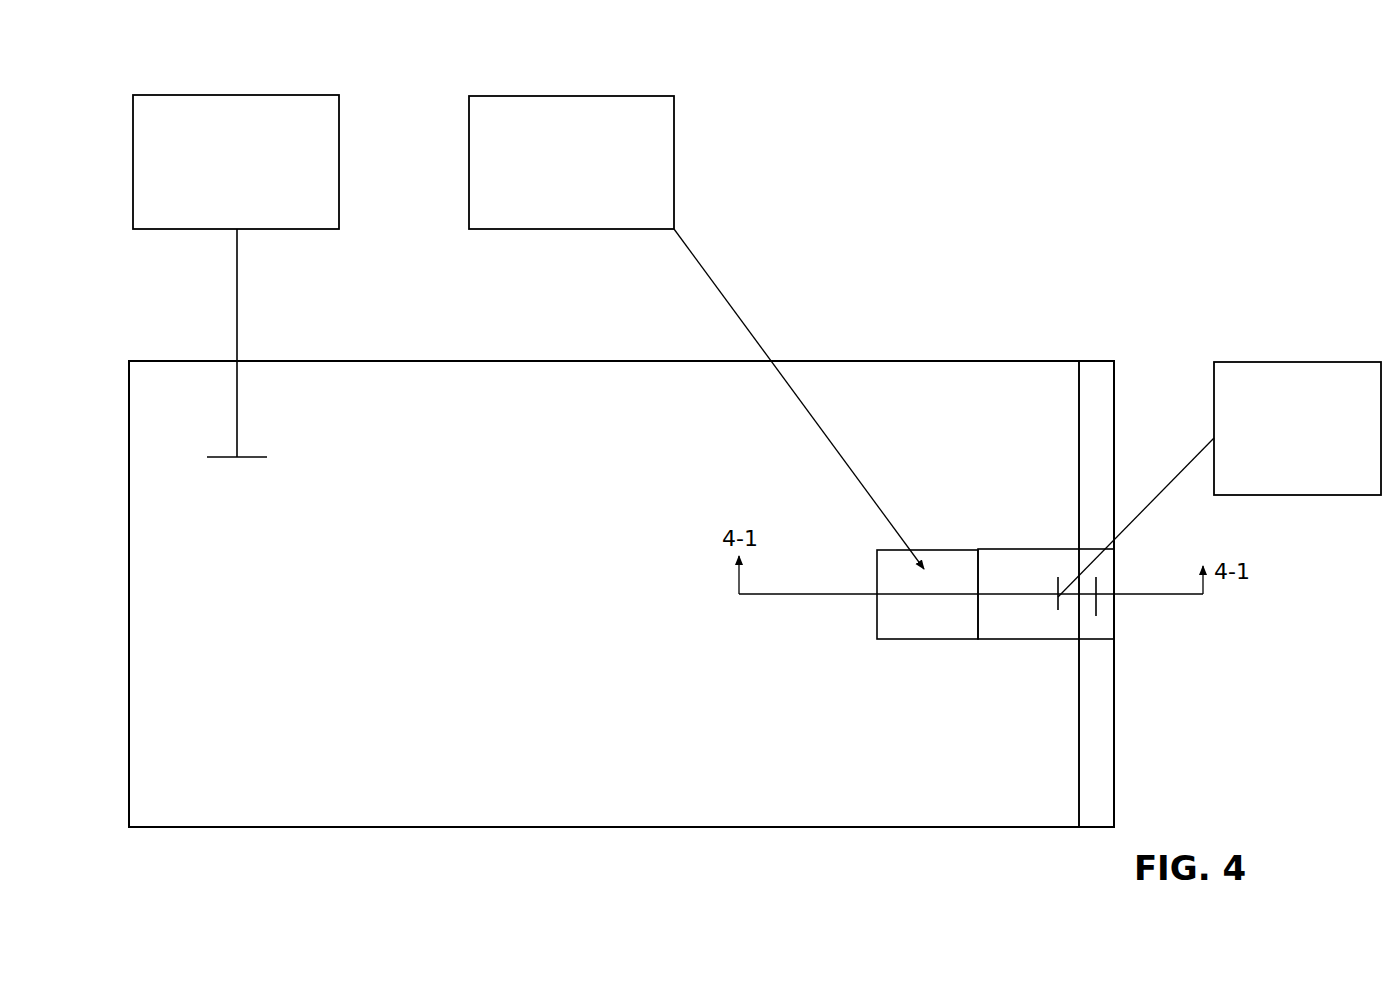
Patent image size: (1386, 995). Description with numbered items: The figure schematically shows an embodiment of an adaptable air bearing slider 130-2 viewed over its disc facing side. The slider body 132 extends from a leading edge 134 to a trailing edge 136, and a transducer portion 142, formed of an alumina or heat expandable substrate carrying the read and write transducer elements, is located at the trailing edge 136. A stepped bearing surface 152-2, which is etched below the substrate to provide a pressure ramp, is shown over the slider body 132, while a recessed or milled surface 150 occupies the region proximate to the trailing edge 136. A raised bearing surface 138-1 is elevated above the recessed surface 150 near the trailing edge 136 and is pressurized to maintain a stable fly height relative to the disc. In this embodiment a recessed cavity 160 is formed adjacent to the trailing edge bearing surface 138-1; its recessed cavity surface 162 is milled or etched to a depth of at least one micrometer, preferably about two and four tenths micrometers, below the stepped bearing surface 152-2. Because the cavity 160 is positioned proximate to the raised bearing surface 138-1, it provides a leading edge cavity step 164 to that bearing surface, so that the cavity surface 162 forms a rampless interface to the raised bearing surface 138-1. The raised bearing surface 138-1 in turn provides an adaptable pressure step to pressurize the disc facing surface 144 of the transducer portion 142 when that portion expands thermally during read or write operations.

The adaptable air bearing slider 130-2 is at (933, 308).
The slider body 132 is at (296, 361).
The leading edge 134 is at (128, 392).
The trailing edge 136 is at (1080, 731).
The raised bearing surface 138-1 is at (1273, 356).
The transducer portion 142 is at (1096, 400).
The disc facing surface 144 is at (1100, 575).
The recessed or milled surface 150 is at (325, 660).
The stepped bearing surface 152-2 is at (283, 94).
The recessed cavity 160 is at (604, 95).
The recessed cavity surface 162 is at (895, 631).
The leading edge cavity step 164 is at (978, 570).